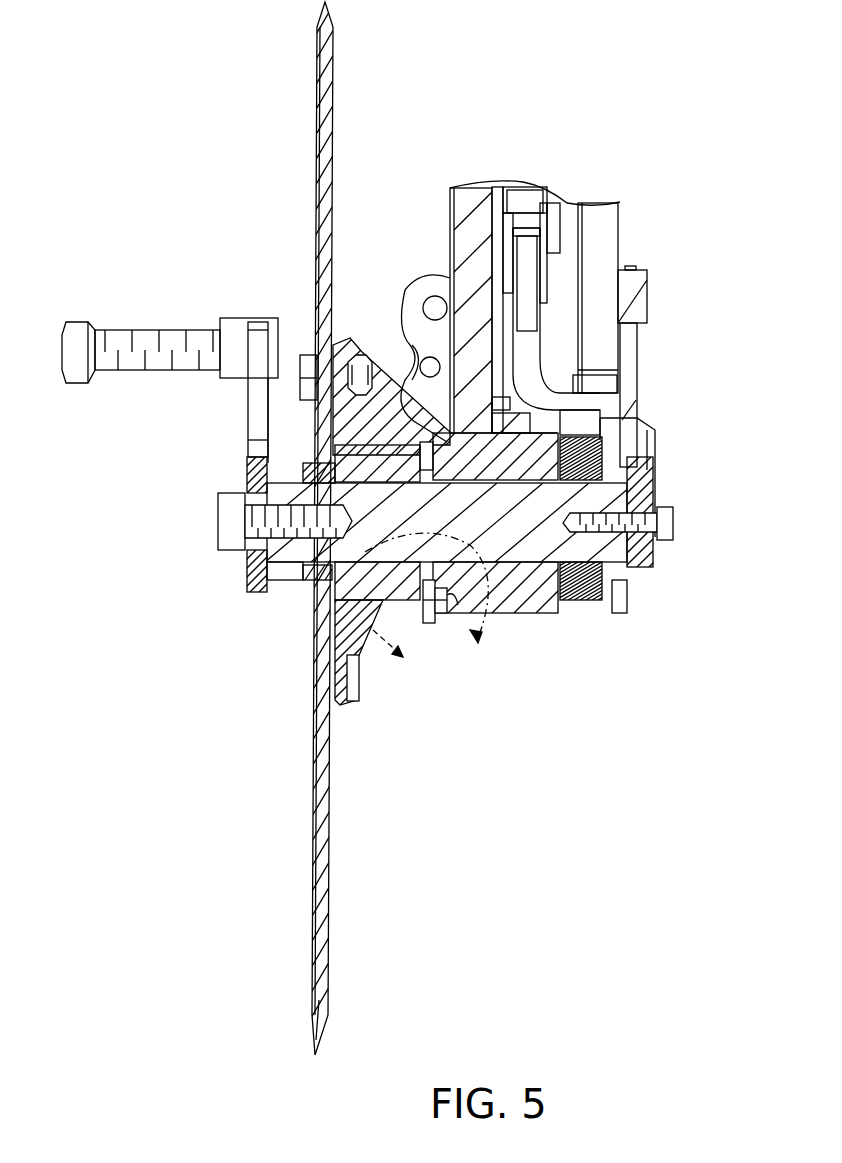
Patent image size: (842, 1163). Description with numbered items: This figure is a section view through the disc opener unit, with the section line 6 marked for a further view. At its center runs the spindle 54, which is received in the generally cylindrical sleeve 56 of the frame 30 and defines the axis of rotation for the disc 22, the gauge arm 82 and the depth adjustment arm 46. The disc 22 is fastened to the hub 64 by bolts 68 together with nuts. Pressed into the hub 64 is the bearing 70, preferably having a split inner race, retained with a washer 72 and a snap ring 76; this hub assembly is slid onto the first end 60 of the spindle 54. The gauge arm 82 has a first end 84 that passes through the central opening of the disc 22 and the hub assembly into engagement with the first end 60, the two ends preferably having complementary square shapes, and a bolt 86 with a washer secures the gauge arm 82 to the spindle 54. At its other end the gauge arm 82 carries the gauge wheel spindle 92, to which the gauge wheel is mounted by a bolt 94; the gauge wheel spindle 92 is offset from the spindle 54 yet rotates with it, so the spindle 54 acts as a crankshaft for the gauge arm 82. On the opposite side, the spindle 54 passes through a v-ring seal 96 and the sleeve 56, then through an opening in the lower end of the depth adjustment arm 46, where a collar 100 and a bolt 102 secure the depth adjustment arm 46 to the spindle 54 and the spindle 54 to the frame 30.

The disc 22 is at (325, 124).
The frame 30 is at (472, 200).
The depth adjustment arm 46 is at (530, 335).
The spindle 54 is at (573, 560).
The sleeve 56 is at (533, 597).
The first end of spindle 60 is at (298, 490).
The hub 64 is at (338, 688).
The bolts 68 is at (305, 362).
The bearing 70 is at (390, 463).
The washer 72 is at (315, 573).
The snap ring 76 is at (433, 600).
The gauge arm 82 is at (216, 412).
The first end of gauge arm 84 is at (250, 583).
The bolt 86 is at (228, 521).
The gauge wheel spindle 92 is at (232, 325).
The bolt 94 is at (133, 340).
The v-ring seal 96 is at (443, 595).
The collar 100 is at (640, 483).
The bolt 102 is at (668, 527).
The section line 6- 6 is at (432, 608).